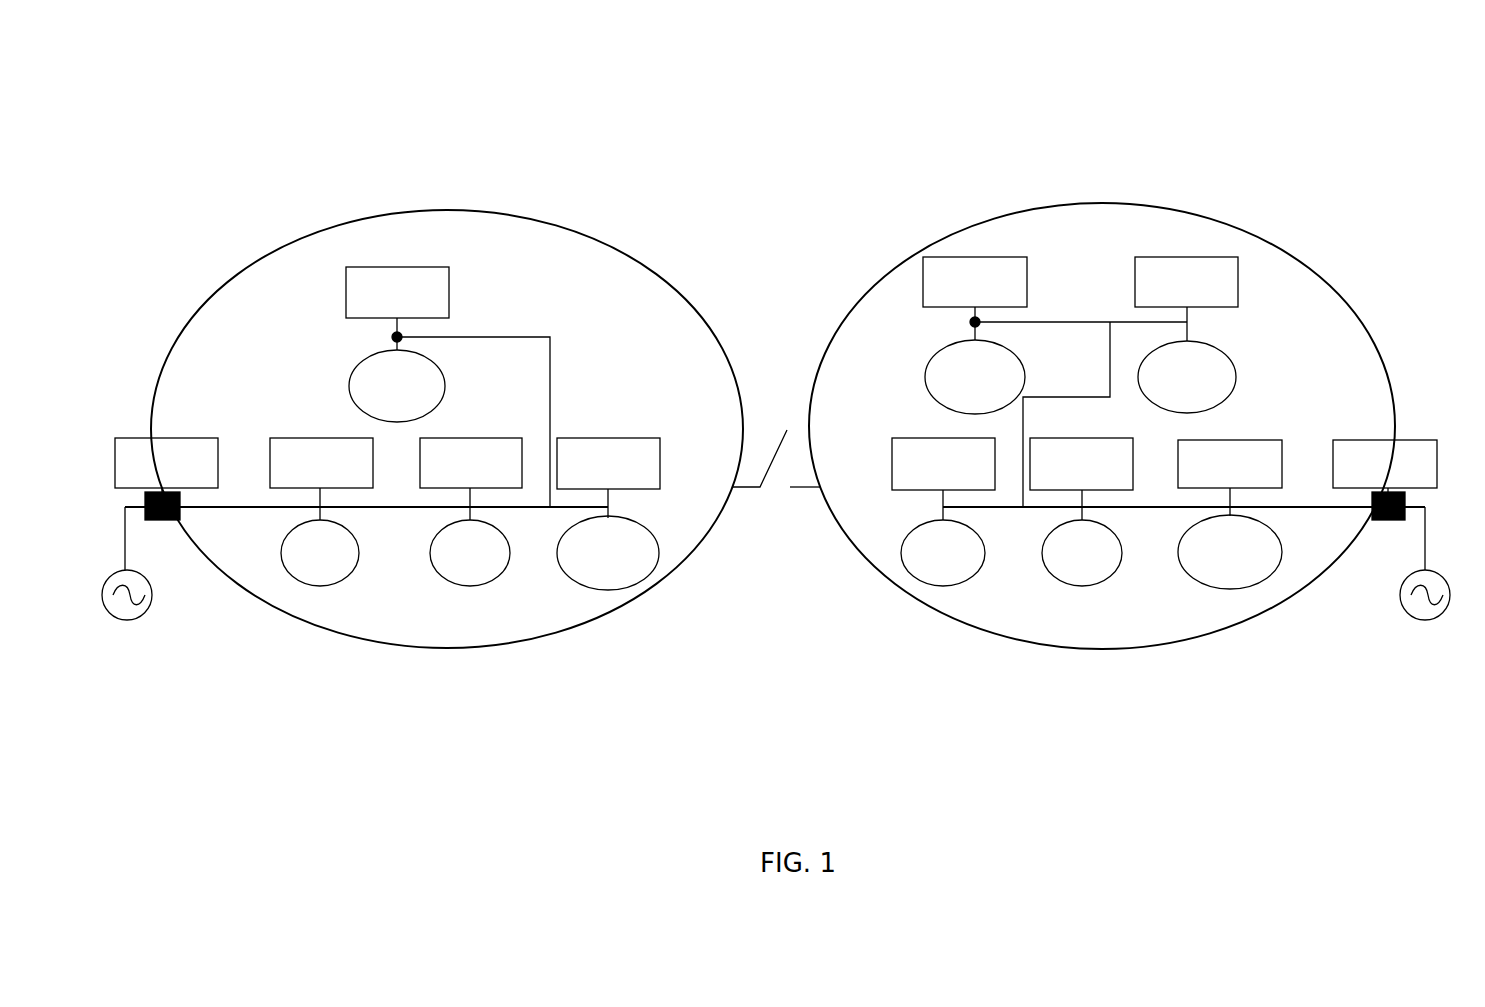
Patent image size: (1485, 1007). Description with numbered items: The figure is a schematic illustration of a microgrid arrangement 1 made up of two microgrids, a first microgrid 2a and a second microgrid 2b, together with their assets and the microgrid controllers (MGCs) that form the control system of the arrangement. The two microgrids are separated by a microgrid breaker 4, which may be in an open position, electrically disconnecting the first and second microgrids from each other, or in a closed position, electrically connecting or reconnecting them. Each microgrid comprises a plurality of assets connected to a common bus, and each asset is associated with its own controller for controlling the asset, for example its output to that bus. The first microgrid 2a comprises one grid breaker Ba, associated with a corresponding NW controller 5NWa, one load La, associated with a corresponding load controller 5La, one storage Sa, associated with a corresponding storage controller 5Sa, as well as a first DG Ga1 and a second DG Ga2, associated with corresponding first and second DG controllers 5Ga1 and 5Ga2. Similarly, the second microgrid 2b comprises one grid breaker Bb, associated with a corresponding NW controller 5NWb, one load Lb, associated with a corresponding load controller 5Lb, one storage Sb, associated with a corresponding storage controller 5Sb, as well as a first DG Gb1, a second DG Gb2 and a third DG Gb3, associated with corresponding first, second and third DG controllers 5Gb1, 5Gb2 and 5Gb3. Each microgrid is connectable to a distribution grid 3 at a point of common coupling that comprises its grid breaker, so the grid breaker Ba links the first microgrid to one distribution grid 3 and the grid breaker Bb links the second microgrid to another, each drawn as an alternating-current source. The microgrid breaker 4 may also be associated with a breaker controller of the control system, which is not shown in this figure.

The microgrid arrangement 1 is at (1277, 93).
The first microgrid 2a is at (458, 228).
The second microgrid 2b is at (1342, 357).
The distribution grid 3 is at (150, 610).
The microgrid breaker 4 is at (787, 430).
The load controller 5La is at (358, 266).
The NW controller 5NWa is at (130, 438).
The first DG controller 5Ga1 is at (270, 452).
The second DG controller 5Ga2 is at (420, 458).
The storage controller 5Sa is at (660, 470).
The load La is at (350, 390).
The first DG Ga1 is at (313, 586).
The second DG Ga2 is at (490, 585).
The storage Sa is at (630, 590).
The grid breaker Ba is at (162, 520).
The load controller 5Lb is at (1002, 256).
The first DG controller 5Gb1 is at (1197, 257).
The second DG controller 5Gb2 is at (893, 452).
The third DG controller 5Gb3 is at (1133, 475).
The storage controller 5Sb is at (1282, 475).
The NW controller 5NWb is at (1415, 440).
The load Lb is at (925, 385).
The first DG Gb1 is at (1236, 365).
The second DG Gb2 is at (920, 583).
The third DG Gb3 is at (1060, 583).
The storage Sb is at (1233, 590).
The grid breaker Bb is at (1385, 520).